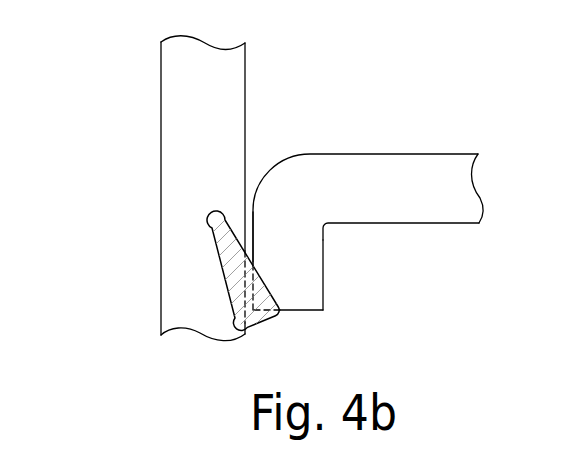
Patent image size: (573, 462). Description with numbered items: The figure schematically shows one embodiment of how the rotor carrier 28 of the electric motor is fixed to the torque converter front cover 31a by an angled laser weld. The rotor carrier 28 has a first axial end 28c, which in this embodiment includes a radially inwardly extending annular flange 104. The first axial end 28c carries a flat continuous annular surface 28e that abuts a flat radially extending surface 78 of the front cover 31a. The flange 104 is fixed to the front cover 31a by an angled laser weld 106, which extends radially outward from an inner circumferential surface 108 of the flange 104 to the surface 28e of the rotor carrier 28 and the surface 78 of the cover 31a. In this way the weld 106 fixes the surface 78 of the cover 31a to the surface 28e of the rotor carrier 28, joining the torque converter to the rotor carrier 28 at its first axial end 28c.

The rotor carrier 28 is at (368, 231).
The first axial end 28c is at (354, 236).
The flat continuous annular surface 28e is at (253, 217).
The torque converter front cover 31a is at (143, 76).
The flat radially extending surface 78 is at (245, 85).
The radially inwardly extending annular flange 104 is at (302, 281).
The angled laser weld 106 is at (226, 244).
The inner circumferential surface 108 is at (302, 312).